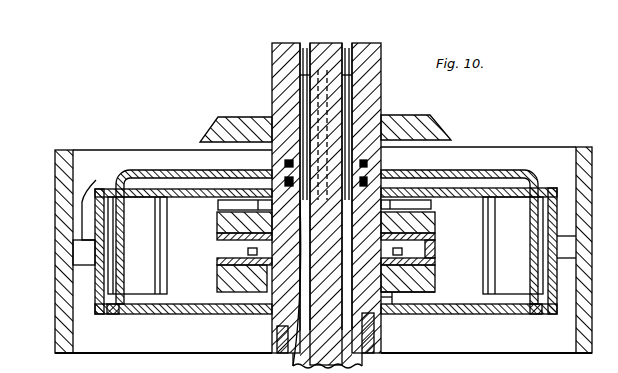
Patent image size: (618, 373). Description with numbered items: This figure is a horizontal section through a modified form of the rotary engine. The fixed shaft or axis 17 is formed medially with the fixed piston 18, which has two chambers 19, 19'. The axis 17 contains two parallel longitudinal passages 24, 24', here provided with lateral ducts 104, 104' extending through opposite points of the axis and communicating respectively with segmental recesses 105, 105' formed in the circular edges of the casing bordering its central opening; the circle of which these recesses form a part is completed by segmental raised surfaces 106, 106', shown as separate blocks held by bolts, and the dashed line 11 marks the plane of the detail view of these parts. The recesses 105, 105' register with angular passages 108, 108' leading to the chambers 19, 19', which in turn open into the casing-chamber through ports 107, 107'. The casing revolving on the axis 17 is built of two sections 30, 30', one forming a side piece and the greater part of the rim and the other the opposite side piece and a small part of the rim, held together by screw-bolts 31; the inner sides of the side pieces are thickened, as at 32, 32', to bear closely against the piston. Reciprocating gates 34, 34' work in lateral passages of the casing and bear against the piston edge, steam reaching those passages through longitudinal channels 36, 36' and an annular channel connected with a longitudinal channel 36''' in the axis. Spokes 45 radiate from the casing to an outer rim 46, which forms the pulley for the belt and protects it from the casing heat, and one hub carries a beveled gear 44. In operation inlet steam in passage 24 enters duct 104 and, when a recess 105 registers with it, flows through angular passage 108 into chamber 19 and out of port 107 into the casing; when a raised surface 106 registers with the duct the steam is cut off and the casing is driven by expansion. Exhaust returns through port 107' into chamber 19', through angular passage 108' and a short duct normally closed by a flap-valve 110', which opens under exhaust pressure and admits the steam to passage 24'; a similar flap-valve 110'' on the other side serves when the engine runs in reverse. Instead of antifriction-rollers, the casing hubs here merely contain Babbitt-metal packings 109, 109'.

The fixed shaft or axis 17 is at (338, 43).
The longitudinal passage 24 is at (271, 124).
The longitudinal passage 24' is at (380, 124).
The packing 109' is at (261, 141).
The longitudinal channel 36''' is at (385, 143).
The flap-valve 110'' is at (228, 136).
The beveled gear 44 is at (438, 129).
The flap-valve 110' is at (469, 144).
The lateral duct 104 is at (183, 174).
The screw-bolts 31 is at (110, 246).
The segmental raised surface 106 is at (183, 321).
The casing section 30 is at (542, 235).
The casing section 30' is at (469, 322).
The longitudinal channel 36 is at (194, 228).
The longitudinal channel 36' is at (459, 228).
The spokes 45 is at (94, 201).
The outer rim 46 is at (57, 227).
The reciprocating gate 34 is at (138, 245).
The reciprocating gate 34' is at (510, 245).
The segmental recess 105 is at (232, 207).
The segmental raised surface 106' is at (423, 206).
The block 11 is at (216, 221).
The chamber 19 is at (227, 249).
The chamber 19' is at (431, 257).
The inwardly-extended thickened portion 32 is at (408, 196).
The inwardly-extended thickened portion 32' is at (433, 315).
The fixed piston 18 is at (433, 249).
The port 107 is at (221, 280).
The port 107' is at (426, 282).
The packing 109 is at (257, 341).
The lateral duct 104' is at (397, 343).
The segmental recess 105' is at (401, 313).
The angular passage 108' is at (417, 321).
The angular passage 108 is at (281, 286).